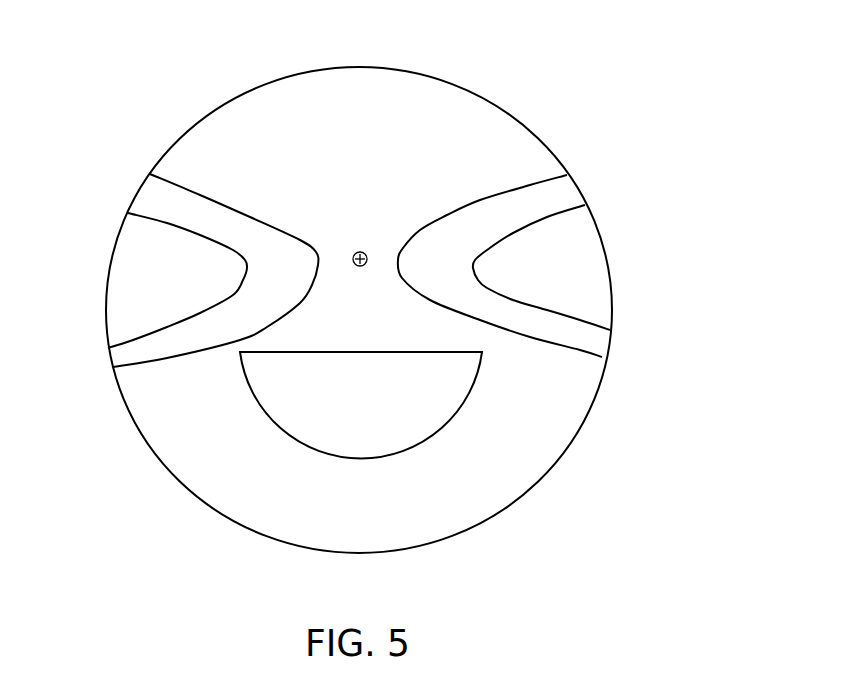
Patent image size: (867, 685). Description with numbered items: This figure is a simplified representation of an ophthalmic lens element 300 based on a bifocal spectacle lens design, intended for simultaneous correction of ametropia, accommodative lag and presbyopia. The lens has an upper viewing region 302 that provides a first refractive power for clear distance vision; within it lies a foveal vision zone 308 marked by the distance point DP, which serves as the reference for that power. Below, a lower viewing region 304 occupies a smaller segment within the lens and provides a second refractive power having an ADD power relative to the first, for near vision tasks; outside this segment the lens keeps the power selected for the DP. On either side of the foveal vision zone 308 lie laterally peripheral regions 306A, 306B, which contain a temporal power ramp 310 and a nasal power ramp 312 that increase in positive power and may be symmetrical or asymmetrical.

The ophthalmic lens element 300 is at (598, 96).
The upper viewing region 302 is at (378, 150).
The lower viewing region 304 is at (383, 397).
The peripheral region 306A is at (125, 261).
The peripheral region 306B is at (629, 316).
The foveal vision zone 308 is at (341, 242).
The temporal power ramp 310 is at (161, 306).
The nasal power ramp 312 is at (580, 306).